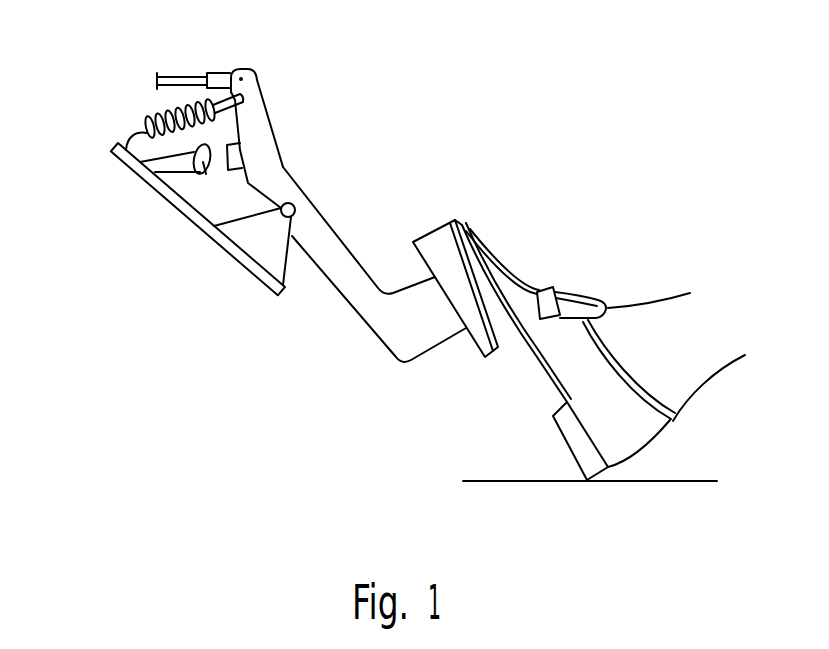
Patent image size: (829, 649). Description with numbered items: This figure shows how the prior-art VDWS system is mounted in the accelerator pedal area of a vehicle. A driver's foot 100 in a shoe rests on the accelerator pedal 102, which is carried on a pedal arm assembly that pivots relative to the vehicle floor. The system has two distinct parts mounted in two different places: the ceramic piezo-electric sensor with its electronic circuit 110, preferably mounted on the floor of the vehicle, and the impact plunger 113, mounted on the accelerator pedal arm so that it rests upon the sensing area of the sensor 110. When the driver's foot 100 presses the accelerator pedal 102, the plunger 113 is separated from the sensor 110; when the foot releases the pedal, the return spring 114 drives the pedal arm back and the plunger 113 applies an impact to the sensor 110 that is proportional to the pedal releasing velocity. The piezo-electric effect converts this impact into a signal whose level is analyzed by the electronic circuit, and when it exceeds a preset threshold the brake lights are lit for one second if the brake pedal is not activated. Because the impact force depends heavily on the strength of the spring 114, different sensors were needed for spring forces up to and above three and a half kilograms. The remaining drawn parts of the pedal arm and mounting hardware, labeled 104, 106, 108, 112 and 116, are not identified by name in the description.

The driver's foot 100 is at (483, 253).
The accelerator pedal 102 is at (483, 345).
The pedal lever arm 104 is at (342, 238).
The pivot 106 is at (294, 204).
The pedal arm 108 is at (245, 101).
The sensor with electronic circuit 110 is at (241, 148).
The pedal platform 112 is at (157, 170).
The plunger 113 is at (210, 176).
The spring 114 is at (138, 127).
The adjustment rod 116 is at (175, 77).